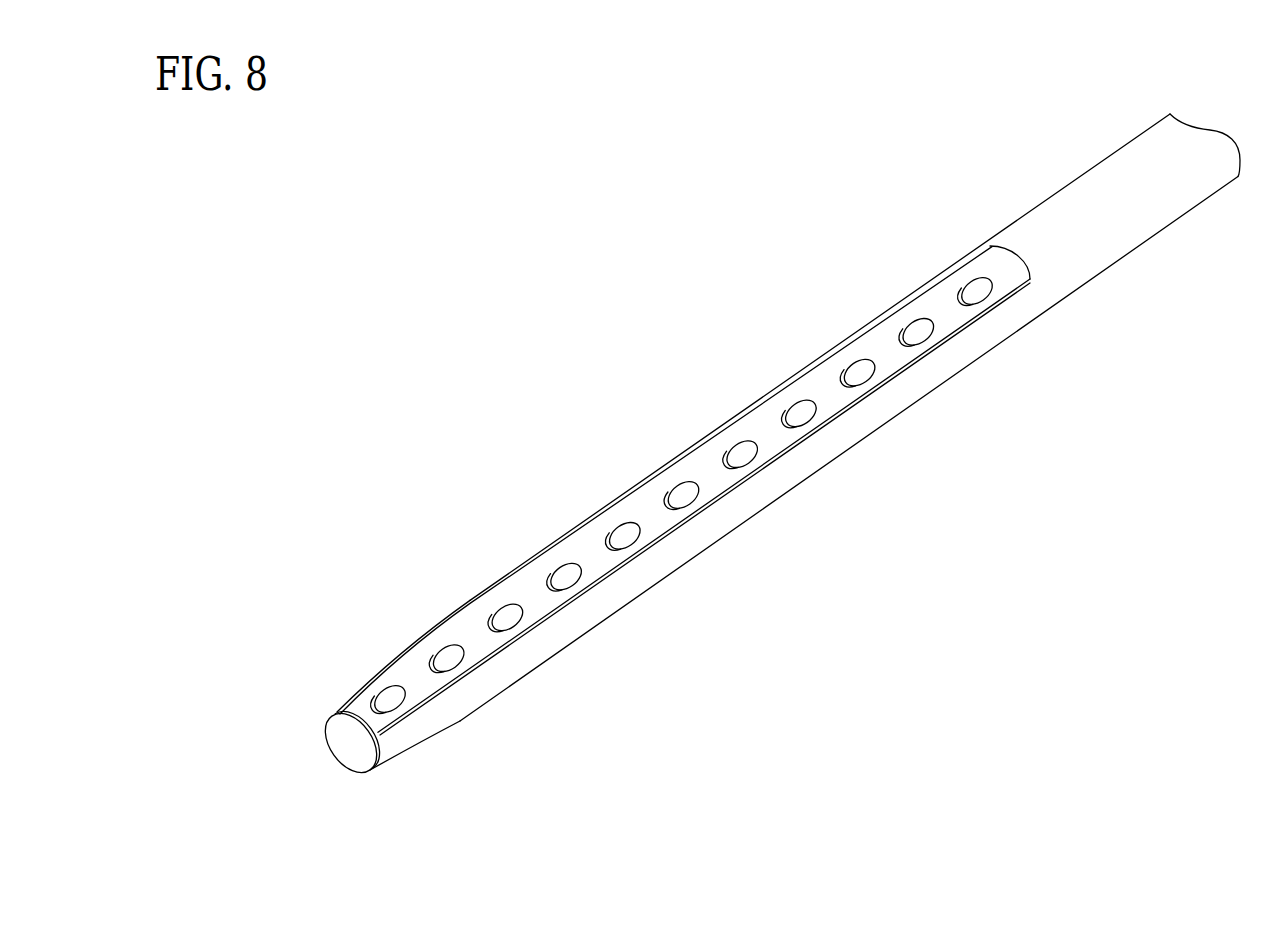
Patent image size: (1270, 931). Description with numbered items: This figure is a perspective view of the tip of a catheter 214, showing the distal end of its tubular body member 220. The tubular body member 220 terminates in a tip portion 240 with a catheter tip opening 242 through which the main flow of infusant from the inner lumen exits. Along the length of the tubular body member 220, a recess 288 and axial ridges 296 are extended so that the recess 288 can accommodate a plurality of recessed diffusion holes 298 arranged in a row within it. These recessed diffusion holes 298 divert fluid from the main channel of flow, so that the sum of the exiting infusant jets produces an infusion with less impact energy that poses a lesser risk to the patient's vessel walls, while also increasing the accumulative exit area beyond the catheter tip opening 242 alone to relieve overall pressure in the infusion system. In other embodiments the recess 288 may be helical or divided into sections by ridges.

The catheter 214 is at (376, 288).
The tubular body member 220 is at (1102, 238).
The tip portion 240 is at (443, 732).
The catheter tip opening 242 is at (355, 750).
The recess 288 is at (946, 303).
The axial ridges 296 is at (385, 663).
The recessed diffusion holes 298 is at (860, 370).